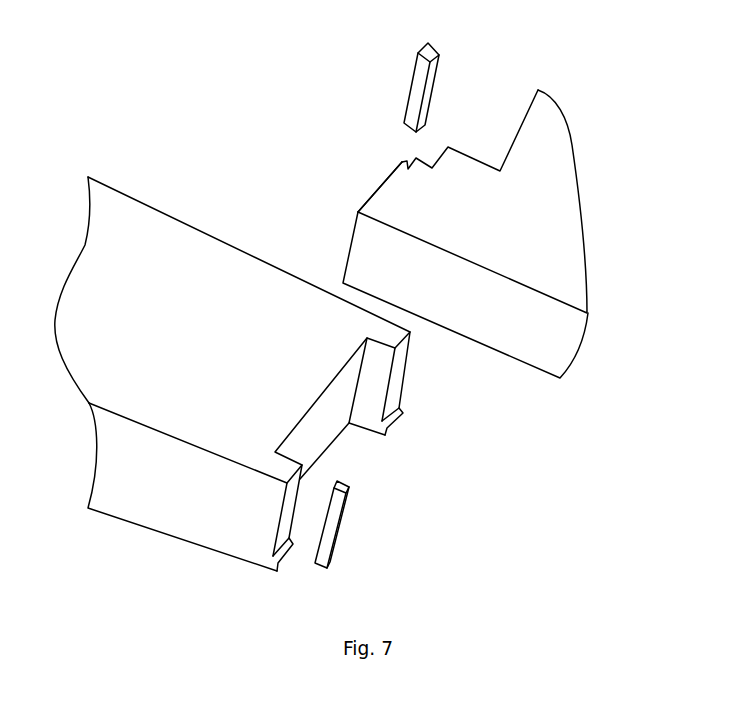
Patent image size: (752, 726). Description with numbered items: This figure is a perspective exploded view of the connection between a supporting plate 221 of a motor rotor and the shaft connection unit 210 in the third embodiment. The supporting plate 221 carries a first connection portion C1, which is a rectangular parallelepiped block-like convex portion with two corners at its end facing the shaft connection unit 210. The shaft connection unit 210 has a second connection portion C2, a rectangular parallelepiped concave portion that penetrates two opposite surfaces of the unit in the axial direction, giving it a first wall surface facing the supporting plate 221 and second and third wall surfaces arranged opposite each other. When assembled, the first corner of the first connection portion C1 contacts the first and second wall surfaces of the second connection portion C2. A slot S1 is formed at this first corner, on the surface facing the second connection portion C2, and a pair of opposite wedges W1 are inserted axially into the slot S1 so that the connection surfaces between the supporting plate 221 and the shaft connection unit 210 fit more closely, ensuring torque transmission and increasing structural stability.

The shaft connection unit 210 is at (133, 272).
The supporting plate 221 is at (550, 235).
The slot S1 is at (402, 162).
The first connection portion C1 is at (392, 201).
The second connection portion C2 is at (330, 423).
The wedge W1 is at (418, 102).